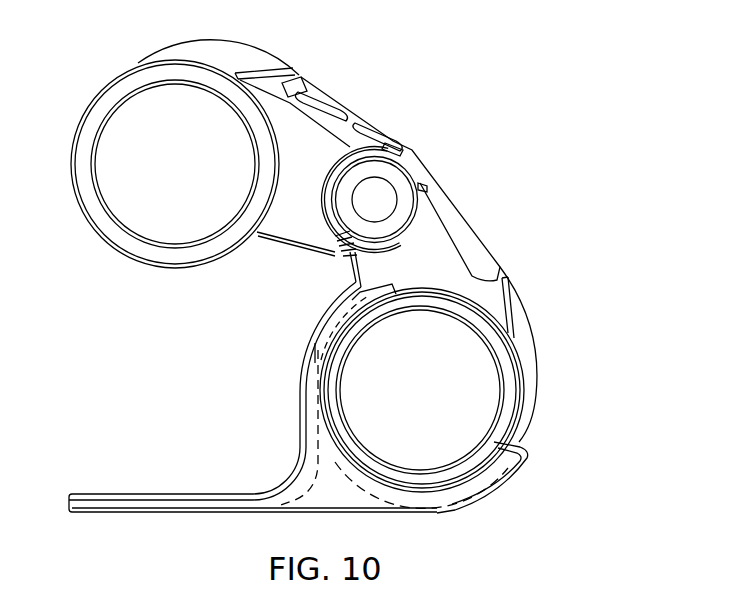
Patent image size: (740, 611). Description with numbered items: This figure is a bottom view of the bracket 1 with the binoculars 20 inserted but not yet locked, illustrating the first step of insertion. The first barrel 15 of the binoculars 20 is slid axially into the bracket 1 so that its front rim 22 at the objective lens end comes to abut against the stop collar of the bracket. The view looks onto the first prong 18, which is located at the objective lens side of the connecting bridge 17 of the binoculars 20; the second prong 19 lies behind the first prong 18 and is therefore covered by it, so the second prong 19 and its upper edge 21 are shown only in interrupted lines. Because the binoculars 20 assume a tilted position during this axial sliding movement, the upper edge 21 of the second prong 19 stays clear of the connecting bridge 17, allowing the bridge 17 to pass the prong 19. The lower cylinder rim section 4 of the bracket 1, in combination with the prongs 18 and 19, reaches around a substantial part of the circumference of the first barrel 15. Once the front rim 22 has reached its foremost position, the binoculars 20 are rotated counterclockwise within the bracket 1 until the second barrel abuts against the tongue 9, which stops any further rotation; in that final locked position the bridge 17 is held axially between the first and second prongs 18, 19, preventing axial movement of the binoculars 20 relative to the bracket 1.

The bracket 1 is at (280, 393).
The lower cylinder rim section 4 is at (510, 460).
The tongue 9 is at (144, 503).
The first barrel 15 is at (515, 308).
The connecting bridge 17 is at (430, 243).
The first prong 18 is at (372, 288).
The second prong 19 is at (330, 328).
The binoculars 20 is at (353, 67).
The upper edge 21 is at (351, 313).
The front rim 22 is at (505, 378).